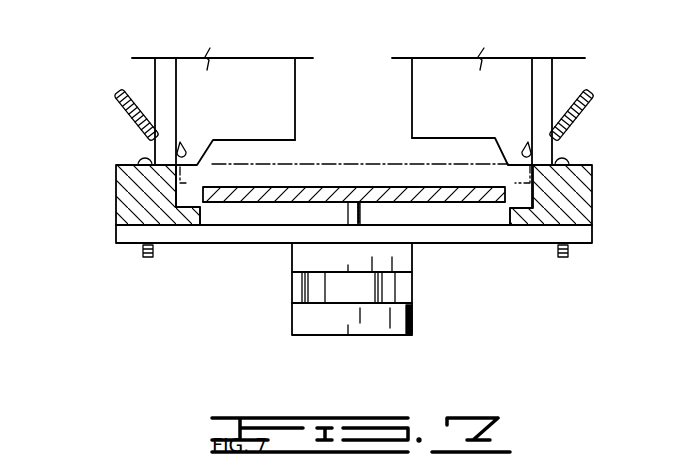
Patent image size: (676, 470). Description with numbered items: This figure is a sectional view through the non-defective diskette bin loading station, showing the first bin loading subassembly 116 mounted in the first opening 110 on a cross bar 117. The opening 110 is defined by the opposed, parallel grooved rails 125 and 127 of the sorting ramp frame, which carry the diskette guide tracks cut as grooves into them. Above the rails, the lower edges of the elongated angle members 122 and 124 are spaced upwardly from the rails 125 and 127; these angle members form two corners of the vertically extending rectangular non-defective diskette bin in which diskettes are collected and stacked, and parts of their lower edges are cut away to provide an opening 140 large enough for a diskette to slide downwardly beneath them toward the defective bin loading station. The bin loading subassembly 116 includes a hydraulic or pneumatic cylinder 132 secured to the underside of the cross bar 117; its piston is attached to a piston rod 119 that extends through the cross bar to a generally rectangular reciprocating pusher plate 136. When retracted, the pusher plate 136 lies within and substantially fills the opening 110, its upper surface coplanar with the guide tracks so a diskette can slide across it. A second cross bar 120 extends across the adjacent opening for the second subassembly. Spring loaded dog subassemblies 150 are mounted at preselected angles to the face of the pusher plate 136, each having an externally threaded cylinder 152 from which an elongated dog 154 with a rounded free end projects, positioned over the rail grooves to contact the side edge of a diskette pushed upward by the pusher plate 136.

The first opening 110 is at (208, 220).
The first bin loading subassembly 116 is at (286, 329).
The cross bar 117 is at (495, 237).
The piston rod 119 is at (347, 210).
The cross bar 120 is at (243, 193).
The angle member 122 is at (468, 67).
The angle member 124 is at (232, 63).
The grooved rail 125 is at (583, 184).
The grooved rail 127 is at (125, 186).
The hydraulic or pneumatic cylinder 132 is at (357, 293).
The pusher plate 136 is at (262, 187).
The opening 140 is at (235, 148).
The spring loaded dog subassembly 150 is at (113, 103).
The cylinder 152 is at (135, 123).
The dog 154 is at (178, 152).